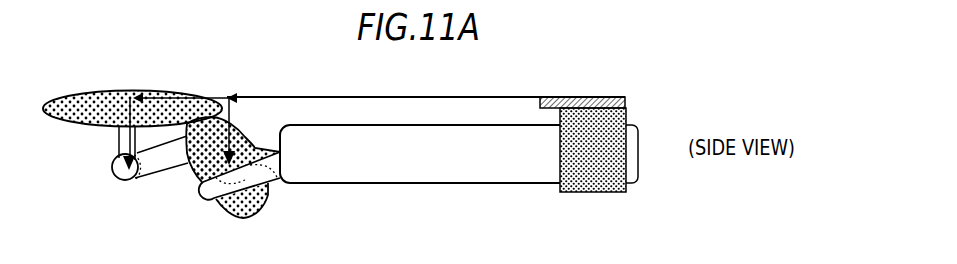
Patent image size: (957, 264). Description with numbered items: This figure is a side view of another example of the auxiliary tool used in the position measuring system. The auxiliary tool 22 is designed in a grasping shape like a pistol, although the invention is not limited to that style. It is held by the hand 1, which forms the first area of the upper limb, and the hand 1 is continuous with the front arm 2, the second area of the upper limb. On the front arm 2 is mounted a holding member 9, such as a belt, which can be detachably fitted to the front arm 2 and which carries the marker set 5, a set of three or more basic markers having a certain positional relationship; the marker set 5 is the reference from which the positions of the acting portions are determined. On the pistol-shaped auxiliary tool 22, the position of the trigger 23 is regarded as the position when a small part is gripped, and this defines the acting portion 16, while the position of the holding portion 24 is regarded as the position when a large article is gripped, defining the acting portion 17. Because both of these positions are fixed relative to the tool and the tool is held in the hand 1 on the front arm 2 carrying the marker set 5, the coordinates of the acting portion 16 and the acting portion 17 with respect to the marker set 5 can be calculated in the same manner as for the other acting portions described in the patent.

The hand 1 is at (251, 139).
The front arm 2 is at (405, 124).
The marker set 5 is at (580, 97).
The holding member 9 is at (627, 112).
The acting portion 16 is at (113, 175).
The acting portion 17 is at (262, 182).
The auxiliary tool 22 is at (77, 95).
The trigger 23 is at (118, 136).
The holding portion 24 is at (218, 203).